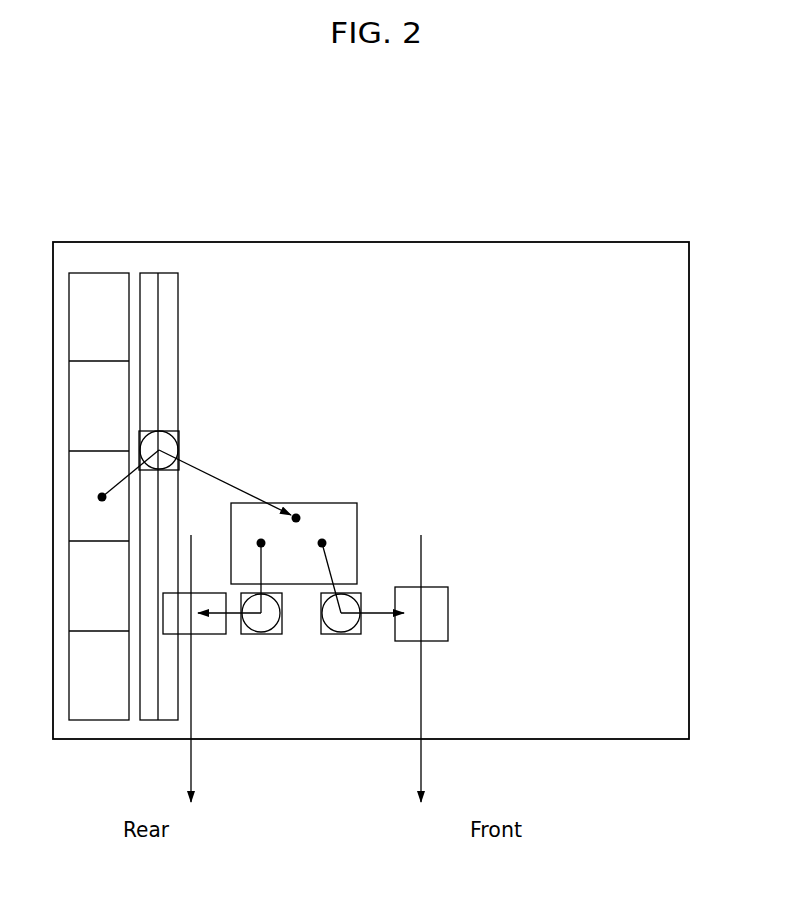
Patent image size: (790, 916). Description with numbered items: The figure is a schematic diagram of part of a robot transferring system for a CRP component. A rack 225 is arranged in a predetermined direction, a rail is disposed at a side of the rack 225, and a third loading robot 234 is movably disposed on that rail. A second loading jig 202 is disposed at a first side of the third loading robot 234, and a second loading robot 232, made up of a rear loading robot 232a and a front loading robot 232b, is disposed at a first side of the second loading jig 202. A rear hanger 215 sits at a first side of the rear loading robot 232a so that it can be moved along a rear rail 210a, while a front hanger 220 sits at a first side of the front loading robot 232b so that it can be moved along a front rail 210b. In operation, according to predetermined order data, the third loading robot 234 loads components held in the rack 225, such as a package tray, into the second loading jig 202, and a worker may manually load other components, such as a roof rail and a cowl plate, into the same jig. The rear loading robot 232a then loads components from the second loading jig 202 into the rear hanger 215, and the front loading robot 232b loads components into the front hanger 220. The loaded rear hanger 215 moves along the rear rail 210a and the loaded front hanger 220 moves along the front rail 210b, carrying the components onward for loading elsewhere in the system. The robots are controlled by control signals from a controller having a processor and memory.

The second loading jig 202 is at (337, 503).
The rear rail 210a is at (191, 773).
The front rail 210b is at (421, 775).
The rear hanger 215 is at (210, 634).
The front hanger 220 is at (448, 615).
The rack 225 is at (104, 284).
The second loading robot 232 is at (309, 716).
The rear loading robot 232a is at (267, 634).
The front loading robot 232b is at (330, 634).
The third loading robot 234 is at (176, 441).